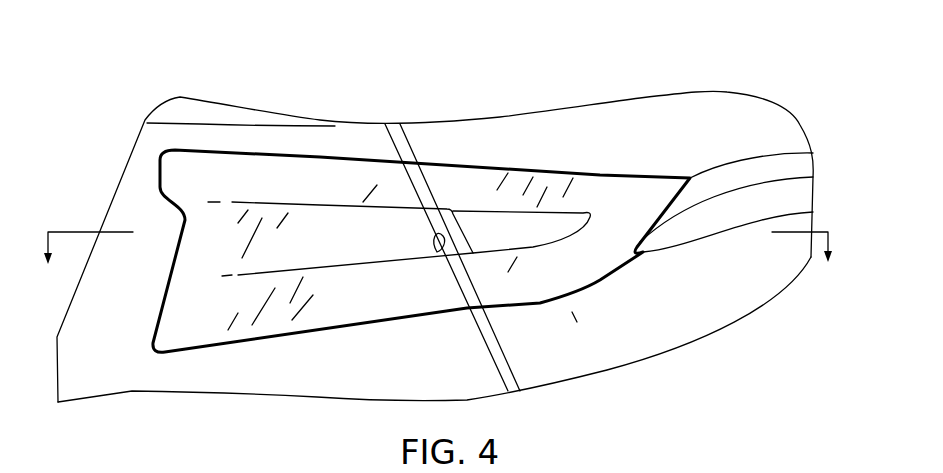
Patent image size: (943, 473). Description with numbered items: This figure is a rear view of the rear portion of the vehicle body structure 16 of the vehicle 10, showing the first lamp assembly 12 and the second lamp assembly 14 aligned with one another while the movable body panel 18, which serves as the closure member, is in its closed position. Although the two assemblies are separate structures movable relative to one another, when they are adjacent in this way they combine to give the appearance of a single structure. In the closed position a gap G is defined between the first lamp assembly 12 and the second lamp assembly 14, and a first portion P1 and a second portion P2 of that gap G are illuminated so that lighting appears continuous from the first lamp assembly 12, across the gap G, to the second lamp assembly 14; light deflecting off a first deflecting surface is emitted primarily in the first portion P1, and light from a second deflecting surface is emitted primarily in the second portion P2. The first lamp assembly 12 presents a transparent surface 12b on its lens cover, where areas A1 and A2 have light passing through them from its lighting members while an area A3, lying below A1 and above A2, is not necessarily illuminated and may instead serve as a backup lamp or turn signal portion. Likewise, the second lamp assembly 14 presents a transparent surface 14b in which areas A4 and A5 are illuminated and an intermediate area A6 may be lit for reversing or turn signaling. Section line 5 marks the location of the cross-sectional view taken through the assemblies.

The vehicle 10 is at (251, 42).
The first lamp assembly 12 is at (600, 172).
The transparent surface 12b is at (637, 197).
The second lamp assembly 14 is at (318, 155).
The transparent surface 14b is at (200, 318).
The vehicle body structure 16 is at (212, 113).
The movable body panel 18 is at (718, 128).
The first portion of the gap P1 is at (418, 188).
The second portion of the gap P2 is at (463, 320).
The gap G is at (437, 252).
The area A1 is at (497, 190).
The area A2 is at (542, 280).
The area A3 is at (555, 225).
The area A4 is at (268, 180).
The area A5 is at (276, 313).
The area A6 is at (352, 237).
The section line 5- 5 is at (440, 268).